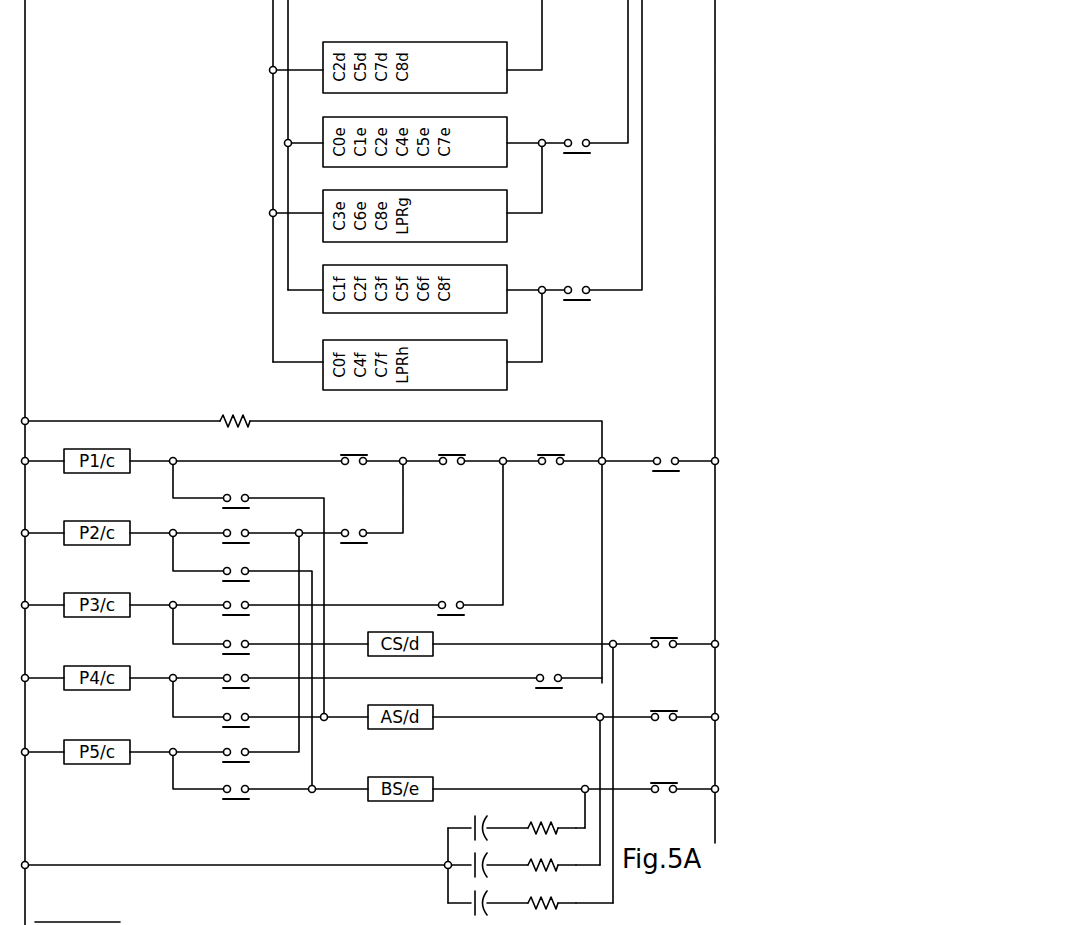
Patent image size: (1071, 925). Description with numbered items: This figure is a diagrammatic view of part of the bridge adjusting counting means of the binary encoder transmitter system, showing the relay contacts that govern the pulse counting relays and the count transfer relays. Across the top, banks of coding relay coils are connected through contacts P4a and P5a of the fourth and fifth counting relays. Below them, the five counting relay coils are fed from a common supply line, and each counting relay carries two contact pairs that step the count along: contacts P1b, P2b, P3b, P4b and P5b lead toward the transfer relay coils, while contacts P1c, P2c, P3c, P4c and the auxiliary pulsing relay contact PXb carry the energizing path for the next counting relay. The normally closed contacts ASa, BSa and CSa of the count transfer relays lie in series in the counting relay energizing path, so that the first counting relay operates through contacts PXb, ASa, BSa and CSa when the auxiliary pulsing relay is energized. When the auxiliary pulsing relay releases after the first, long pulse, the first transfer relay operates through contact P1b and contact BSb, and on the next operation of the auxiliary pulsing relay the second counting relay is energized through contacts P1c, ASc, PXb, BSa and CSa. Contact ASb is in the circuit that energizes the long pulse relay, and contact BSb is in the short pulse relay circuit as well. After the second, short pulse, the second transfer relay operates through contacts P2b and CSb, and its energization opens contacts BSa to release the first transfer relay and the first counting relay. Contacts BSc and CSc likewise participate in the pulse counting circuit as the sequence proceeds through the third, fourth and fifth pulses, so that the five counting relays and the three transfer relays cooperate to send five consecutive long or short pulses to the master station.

The contact of counting relay P4 P4a is at (578, 139).
The contact of counting relay P5 P5a is at (578, 286).
The normally closed contact of count transfer relay AS ASa is at (352, 452).
The normally closed contact of count transfer relay BS BSa is at (450, 452).
The normally closed contact of count transfer relay CS CSa is at (549, 452).
The contact of auxiliary pulsing relay PX PXb is at (667, 457).
The contact of count transfer relay AS ASc is at (355, 529).
The contact of count transfer relay BS BSc is at (450, 602).
The contact of count transfer relay CS CSc is at (550, 674).
The contact of count transfer relay AS ASb is at (662, 635).
The contact of count transfer relay BS BSb is at (662, 708).
The contact of count transfer relay CS CSb is at (662, 780).
The contact of counting relay P1 P1b is at (233, 504).
The contact of counting relay P1 P1c is at (233, 539).
The contact of counting relay P2 P2b is at (233, 577).
The contact of counting relay P2 P2c is at (233, 611).
The contact of counting relay P3 P3b is at (233, 650).
The contact of counting relay P3 P3c is at (233, 684).
The contact of counting relay P4 P4b is at (233, 723).
The contact of counting relay P4 P4c is at (233, 758).
The contact of counting relay P5 P5b is at (233, 795).